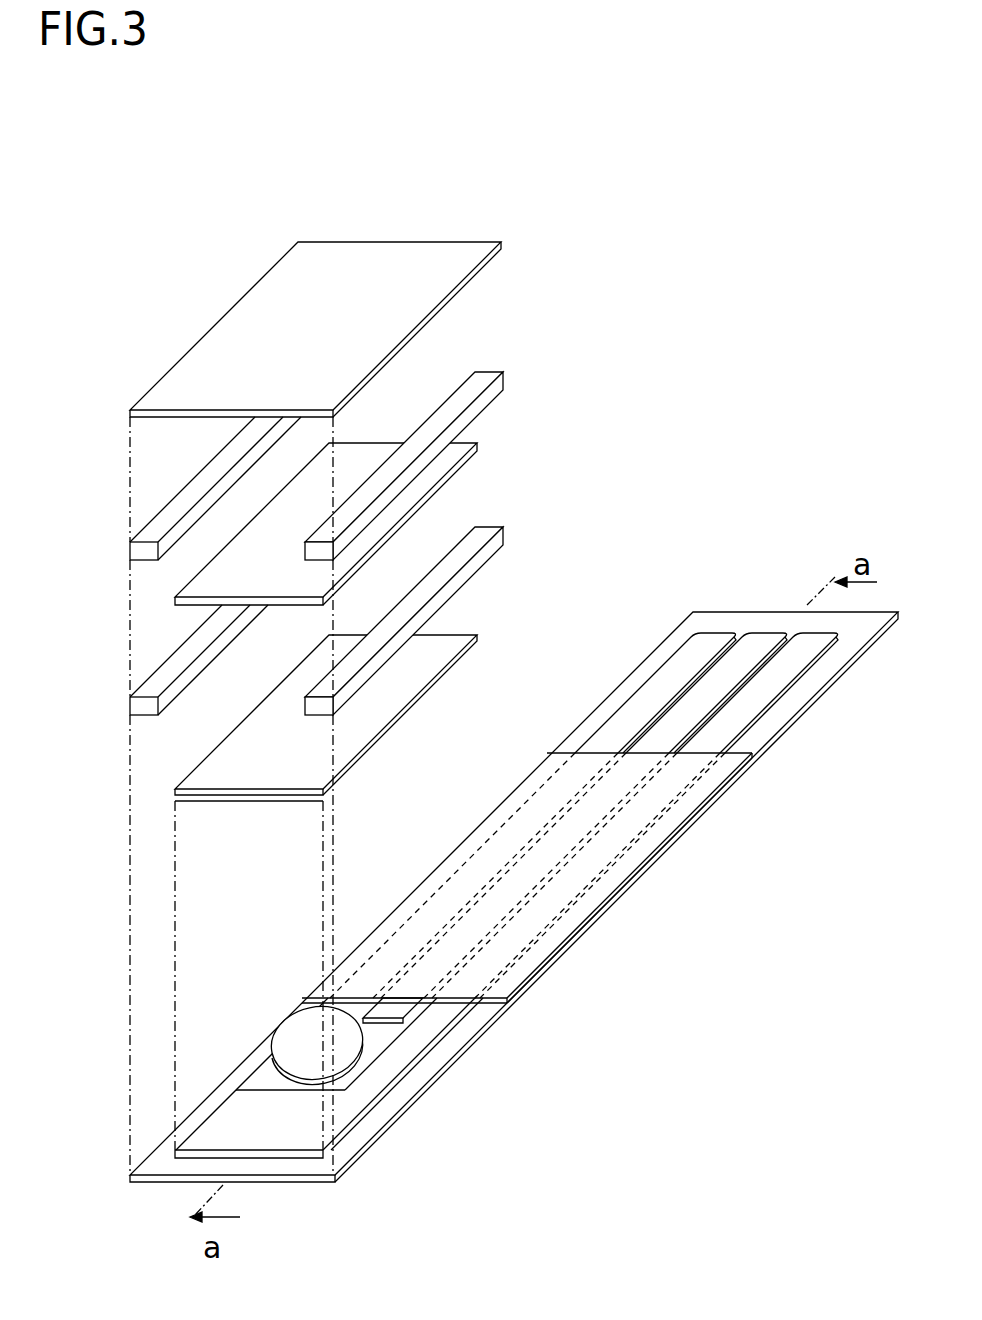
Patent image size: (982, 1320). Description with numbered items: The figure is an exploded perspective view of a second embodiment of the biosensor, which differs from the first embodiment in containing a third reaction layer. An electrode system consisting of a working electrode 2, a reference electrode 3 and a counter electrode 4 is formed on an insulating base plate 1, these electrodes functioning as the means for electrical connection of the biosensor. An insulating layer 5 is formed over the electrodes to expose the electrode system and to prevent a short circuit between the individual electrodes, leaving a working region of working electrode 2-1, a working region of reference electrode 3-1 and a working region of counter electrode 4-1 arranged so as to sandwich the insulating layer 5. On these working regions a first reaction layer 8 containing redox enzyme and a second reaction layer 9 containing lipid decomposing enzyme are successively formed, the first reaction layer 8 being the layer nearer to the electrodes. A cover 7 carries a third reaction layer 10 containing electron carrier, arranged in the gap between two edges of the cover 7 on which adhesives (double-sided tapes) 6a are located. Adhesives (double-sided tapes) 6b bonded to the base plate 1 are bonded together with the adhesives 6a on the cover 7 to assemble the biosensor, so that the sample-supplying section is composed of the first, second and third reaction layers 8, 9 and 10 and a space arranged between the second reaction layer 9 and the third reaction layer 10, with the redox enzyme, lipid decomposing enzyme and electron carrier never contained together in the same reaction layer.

The insulating base plate 1 is at (763, 737).
The working electrode 2 is at (643, 712).
The reference electrode 3 is at (707, 685).
The counter electrode 4 is at (780, 670).
The insulating layer 5 is at (710, 787).
The adhesive (double-sided tape) 6a is at (485, 400).
The adhesive (double-sided tape) 6b is at (480, 558).
The cover 7 is at (463, 265).
The first reaction layer 8 is at (217, 802).
The second reaction layer 9 is at (222, 760).
The third reaction layer 10 is at (448, 460).
The working region of working electrode 2-1 is at (300, 1042).
The working region of reference electrode 3-1 is at (420, 1015).
The working region of counter electrode 4-1 is at (253, 1108).